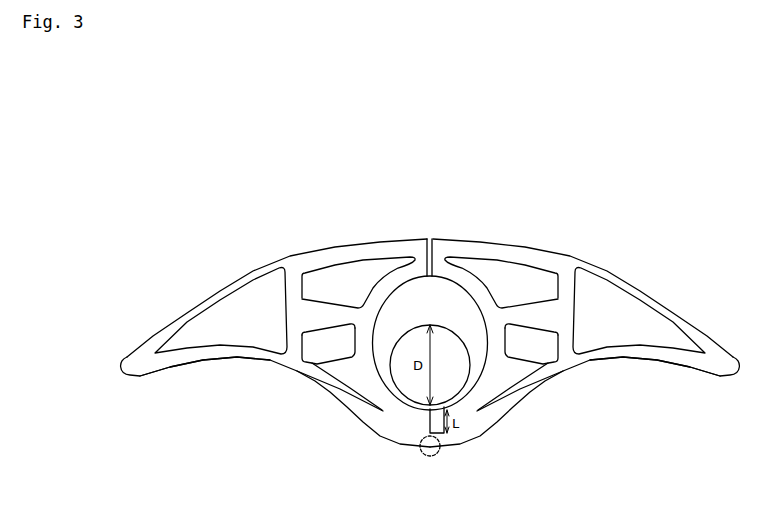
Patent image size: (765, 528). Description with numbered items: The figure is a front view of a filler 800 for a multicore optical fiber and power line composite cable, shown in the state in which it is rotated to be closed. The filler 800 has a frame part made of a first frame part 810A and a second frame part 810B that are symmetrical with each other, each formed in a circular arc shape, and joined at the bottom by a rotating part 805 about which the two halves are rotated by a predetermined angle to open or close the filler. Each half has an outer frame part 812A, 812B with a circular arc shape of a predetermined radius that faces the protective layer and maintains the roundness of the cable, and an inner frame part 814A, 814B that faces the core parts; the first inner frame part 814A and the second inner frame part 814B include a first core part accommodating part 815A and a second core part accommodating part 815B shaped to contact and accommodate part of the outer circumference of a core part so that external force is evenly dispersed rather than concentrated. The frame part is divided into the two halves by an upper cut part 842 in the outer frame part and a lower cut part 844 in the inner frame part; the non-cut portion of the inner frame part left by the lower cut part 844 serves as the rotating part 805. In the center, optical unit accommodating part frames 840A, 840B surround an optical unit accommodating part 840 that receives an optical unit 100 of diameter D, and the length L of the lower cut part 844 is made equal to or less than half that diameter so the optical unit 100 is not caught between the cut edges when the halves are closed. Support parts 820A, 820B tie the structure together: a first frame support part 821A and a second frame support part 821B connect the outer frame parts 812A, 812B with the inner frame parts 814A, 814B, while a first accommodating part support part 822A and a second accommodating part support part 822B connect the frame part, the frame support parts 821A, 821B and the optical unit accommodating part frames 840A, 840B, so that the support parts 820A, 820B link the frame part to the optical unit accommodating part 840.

The filler 800 is at (576, 149).
The first frame part 810A is at (210, 230).
The second frame part 810B is at (652, 228).
The outer frame part 812A is at (202, 311).
The outer frame part 812B is at (658, 311).
The first inner frame part 814A is at (266, 357).
The second inner frame part 814B is at (594, 357).
The first core part accommodating part 815A is at (220, 362).
The second core part accommodating part 815B is at (640, 362).
The support part 820A is at (342, 183).
The support part 820B is at (580, 183).
The first frame support part 821A is at (293, 318).
The second frame support part 821B is at (567, 318).
The first accommodating part support part 822A is at (327, 317).
The second accommodating part support part 822B is at (533, 317).
The optical unit accommodating part 840 is at (449, 312).
The optical unit accommodating part frame 840A is at (366, 348).
The optical unit accommodating part frame 840B is at (494, 348).
The upper cut part 842 is at (426, 256).
The lower cut part 844 is at (428, 423).
The rotating part 805 is at (437, 455).
The optical unit 100 is at (407, 385).